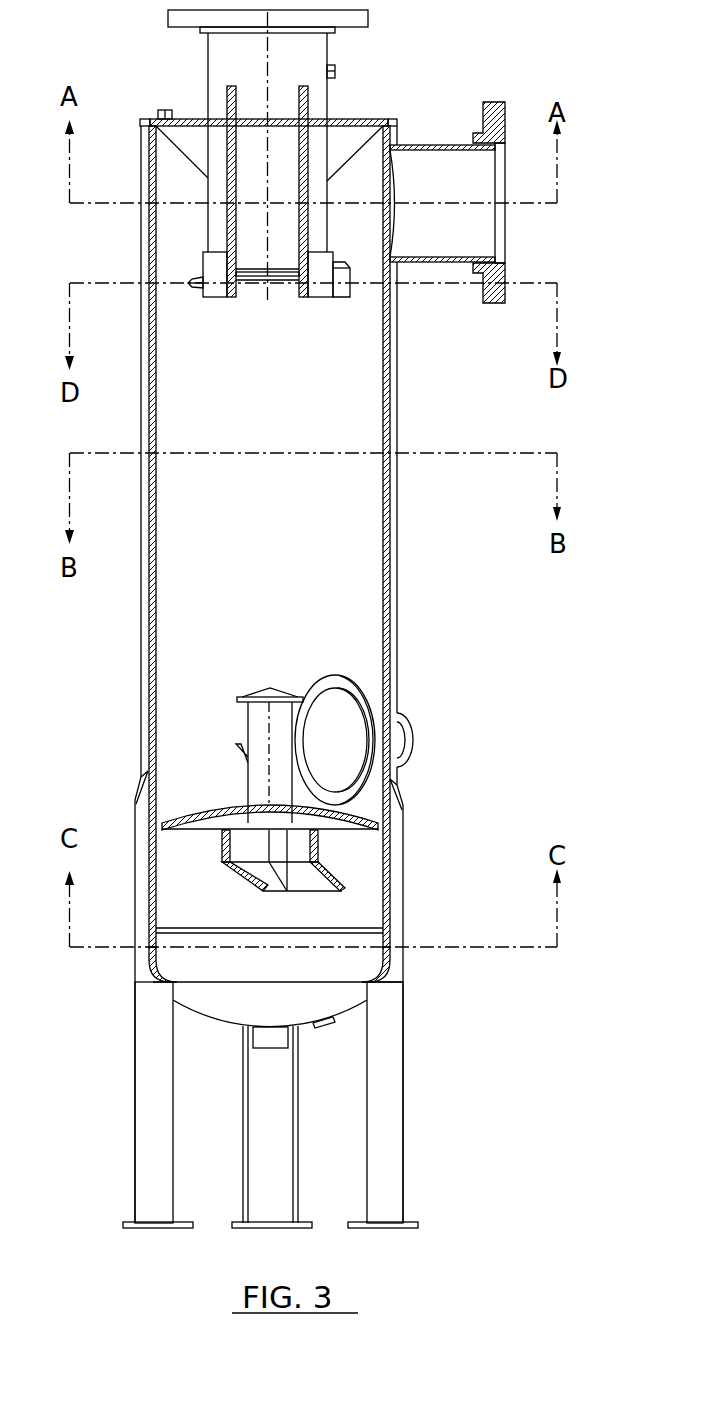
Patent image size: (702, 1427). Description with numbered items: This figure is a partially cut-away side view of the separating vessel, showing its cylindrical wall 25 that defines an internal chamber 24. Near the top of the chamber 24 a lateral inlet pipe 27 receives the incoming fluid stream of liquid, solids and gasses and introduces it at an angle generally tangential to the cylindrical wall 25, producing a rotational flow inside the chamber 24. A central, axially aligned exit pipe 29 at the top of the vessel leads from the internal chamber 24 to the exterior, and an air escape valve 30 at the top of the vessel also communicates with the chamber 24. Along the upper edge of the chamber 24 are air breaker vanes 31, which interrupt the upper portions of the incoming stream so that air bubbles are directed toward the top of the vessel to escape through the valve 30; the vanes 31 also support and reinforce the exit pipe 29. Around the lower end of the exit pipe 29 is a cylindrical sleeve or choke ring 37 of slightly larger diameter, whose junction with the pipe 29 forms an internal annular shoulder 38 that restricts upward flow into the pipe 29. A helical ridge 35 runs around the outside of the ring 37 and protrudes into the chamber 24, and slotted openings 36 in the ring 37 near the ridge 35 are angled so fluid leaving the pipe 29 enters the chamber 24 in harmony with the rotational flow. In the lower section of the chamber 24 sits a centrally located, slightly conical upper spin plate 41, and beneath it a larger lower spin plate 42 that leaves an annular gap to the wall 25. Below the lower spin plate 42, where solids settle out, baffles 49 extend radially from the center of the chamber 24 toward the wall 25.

The internal chamber 24 is at (328, 562).
The cylindrical wall 25 is at (389, 518).
The inlet pipe 27 is at (472, 167).
The exit pipe 29 is at (303, 55).
The air escape valve 30 is at (160, 113).
The air breaker vanes 31 is at (178, 140).
The helical ridge 35 is at (204, 277).
The slotted openings 36 is at (266, 280).
The choke ring 37 is at (312, 296).
The internal annular shoulder 38 is at (302, 276).
The upper spin plate 41 is at (255, 693).
The lower spin plate 42 is at (215, 810).
The baffles 49 is at (300, 878).